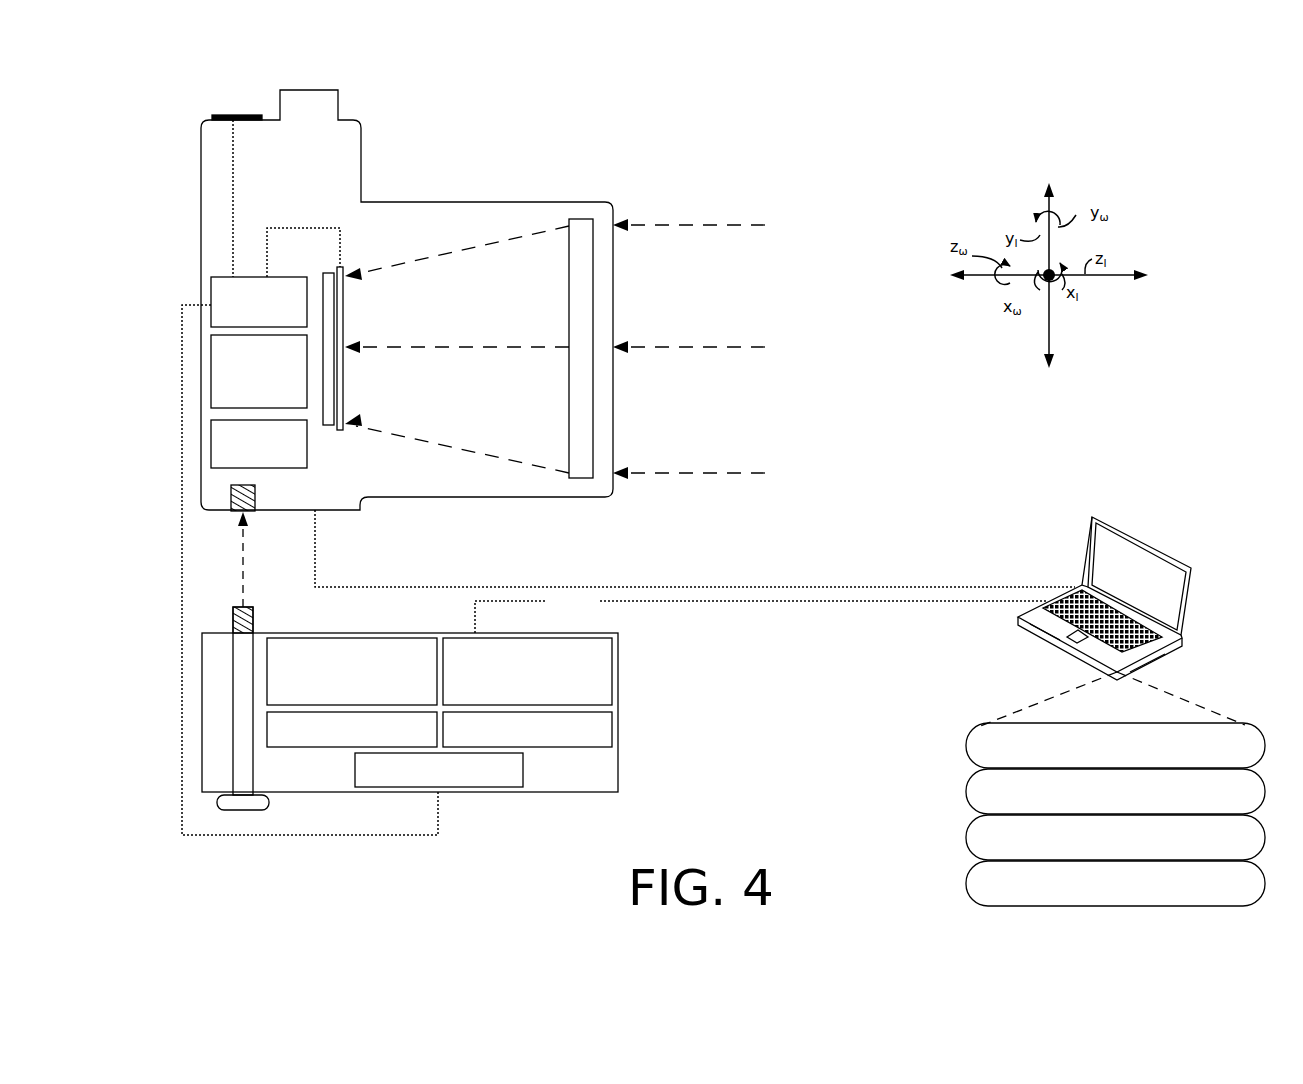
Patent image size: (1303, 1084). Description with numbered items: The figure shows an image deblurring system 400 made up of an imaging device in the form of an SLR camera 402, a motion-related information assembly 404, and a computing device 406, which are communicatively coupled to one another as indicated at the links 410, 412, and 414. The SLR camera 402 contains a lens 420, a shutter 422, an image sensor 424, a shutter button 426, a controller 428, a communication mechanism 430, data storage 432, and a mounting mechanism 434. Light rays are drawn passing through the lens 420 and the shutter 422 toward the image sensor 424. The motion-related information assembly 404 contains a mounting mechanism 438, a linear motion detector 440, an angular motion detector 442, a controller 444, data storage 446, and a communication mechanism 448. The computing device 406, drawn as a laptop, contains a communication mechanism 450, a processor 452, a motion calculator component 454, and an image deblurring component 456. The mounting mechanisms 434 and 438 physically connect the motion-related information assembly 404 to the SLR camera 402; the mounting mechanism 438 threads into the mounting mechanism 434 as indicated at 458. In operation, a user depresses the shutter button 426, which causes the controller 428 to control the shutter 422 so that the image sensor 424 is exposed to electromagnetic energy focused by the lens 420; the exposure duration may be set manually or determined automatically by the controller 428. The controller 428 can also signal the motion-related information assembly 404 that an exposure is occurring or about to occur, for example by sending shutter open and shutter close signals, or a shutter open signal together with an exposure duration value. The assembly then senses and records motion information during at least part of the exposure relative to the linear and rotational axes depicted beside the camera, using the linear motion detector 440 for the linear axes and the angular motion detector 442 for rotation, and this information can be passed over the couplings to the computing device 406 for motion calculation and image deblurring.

The system 400 is at (704, 72).
The SLR camera 402 is at (636, 176).
The motion-related information assembly 404 is at (516, 712).
The computing device 406 is at (1052, 536).
The communicative coupling 410 is at (200, 569).
The communicative coupling 412 is at (333, 562).
The communicative coupling 414 is at (590, 612).
The lens 420 is at (569, 283).
The shutter 422 is at (343, 323).
The image sensor 424 is at (328, 425).
The shutter button 426 is at (238, 115).
The controller 428 is at (290, 324).
The communication mechanism 430 is at (241, 408).
The data storage 432 is at (241, 466).
The mounting mechanism 434 is at (255, 498).
The mounting mechanism 438 is at (253, 611).
The linear motion detector 440 is at (411, 694).
The angular motion detector 442 is at (584, 694).
The controller 444 is at (417, 740).
The data storage 446 is at (582, 740).
The communication mechanism 448 is at (508, 780).
The communication mechanism 450 is at (1222, 756).
The processor 452 is at (1190, 802).
The motion calculator component 454 is at (1229, 848).
The image deblurring component 456 is at (1221, 894).
The threaded connection 458 is at (262, 579).